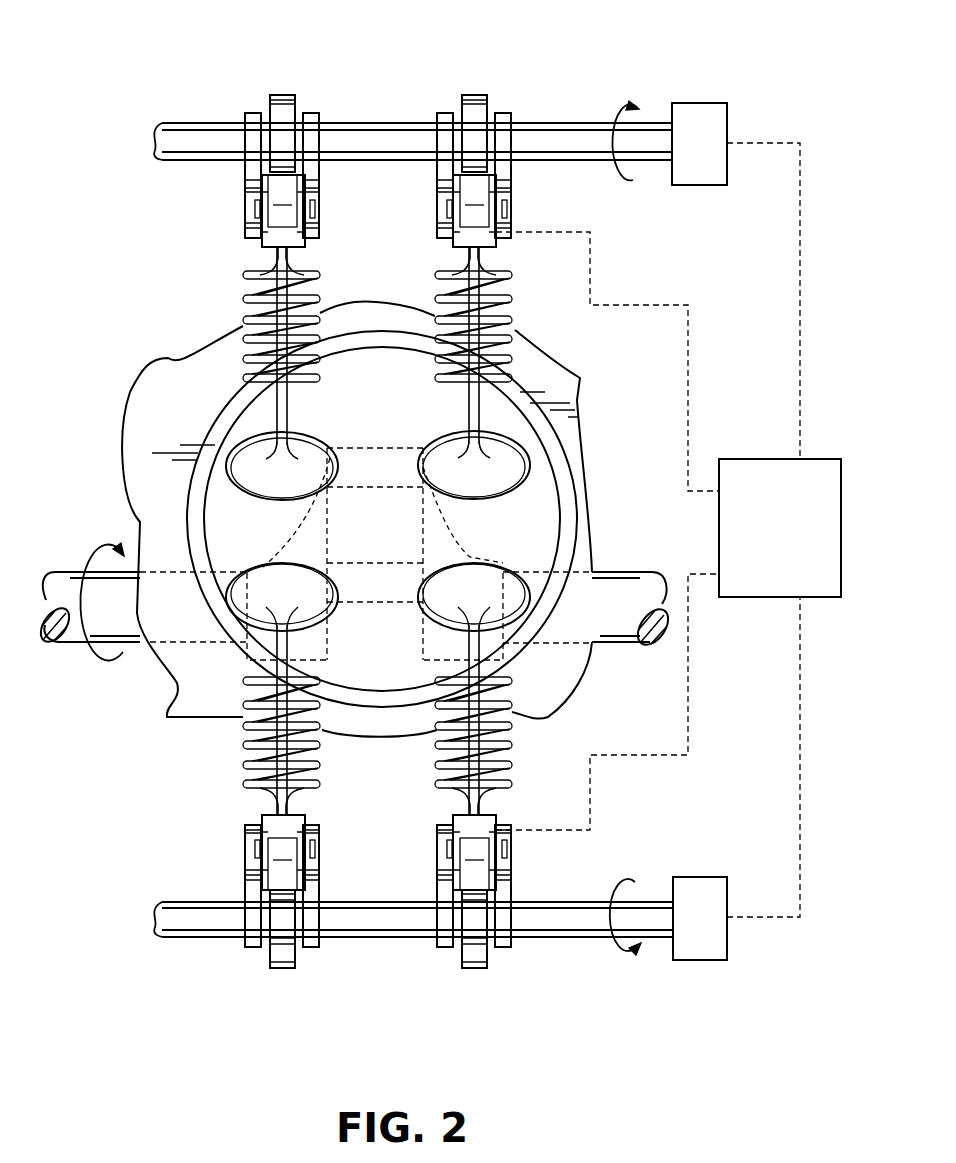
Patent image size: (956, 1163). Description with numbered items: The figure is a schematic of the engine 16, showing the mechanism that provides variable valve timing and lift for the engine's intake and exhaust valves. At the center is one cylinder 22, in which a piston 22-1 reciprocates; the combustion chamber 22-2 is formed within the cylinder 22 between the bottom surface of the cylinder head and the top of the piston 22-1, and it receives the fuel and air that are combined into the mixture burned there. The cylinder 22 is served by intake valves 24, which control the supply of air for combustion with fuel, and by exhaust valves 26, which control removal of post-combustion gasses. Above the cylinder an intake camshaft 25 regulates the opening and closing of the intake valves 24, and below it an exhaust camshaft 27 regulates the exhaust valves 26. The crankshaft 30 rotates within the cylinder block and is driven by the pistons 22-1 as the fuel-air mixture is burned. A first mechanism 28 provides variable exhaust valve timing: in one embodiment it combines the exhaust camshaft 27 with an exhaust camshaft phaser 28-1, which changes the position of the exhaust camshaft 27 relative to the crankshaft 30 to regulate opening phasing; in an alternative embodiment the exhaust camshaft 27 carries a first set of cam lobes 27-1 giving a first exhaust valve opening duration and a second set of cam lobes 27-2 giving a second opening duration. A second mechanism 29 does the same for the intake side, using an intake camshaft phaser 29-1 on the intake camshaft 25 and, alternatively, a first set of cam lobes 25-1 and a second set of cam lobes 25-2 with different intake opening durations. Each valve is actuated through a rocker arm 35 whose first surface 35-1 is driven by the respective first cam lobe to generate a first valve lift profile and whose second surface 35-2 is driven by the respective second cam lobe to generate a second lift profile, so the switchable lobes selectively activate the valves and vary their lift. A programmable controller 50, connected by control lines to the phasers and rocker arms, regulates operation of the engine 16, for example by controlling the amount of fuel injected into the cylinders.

The engine 16 is at (762, 246).
The cylinder 22 is at (208, 430).
The piston 22-1 is at (193, 555).
The combustion chamber 22-2 is at (358, 525).
The intake valve 24 is at (308, 458).
The intake camshaft 25 is at (385, 135).
The first set of cam lobes 25-1 is at (473, 100).
The second set of cam lobes 25-2 is at (443, 115).
The exhaust valve 26 is at (303, 613).
The exhaust camshaft 27 is at (385, 930).
The first set of cam lobes 27-1 is at (475, 962).
The second set of cam lobes 27-2 is at (445, 948).
The first mechanism 28 is at (622, 978).
The exhaust camshaft phaser 28-1 is at (681, 929).
The second mechanism 29 is at (580, 74).
The intake camshaft phaser 29-1 is at (680, 155).
The crankshaft 30 is at (632, 618).
The rocker arm 35 is at (443, 225).
The first surface 35-1 is at (470, 178).
The second surface 35-2 is at (445, 190).
The controller 50 is at (767, 537).